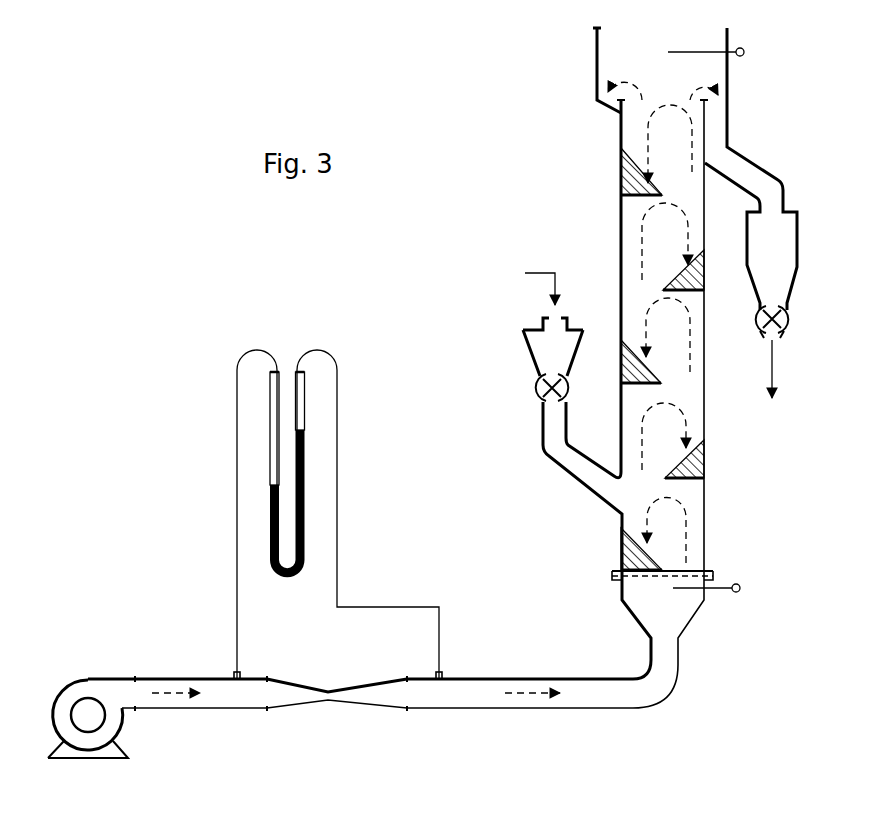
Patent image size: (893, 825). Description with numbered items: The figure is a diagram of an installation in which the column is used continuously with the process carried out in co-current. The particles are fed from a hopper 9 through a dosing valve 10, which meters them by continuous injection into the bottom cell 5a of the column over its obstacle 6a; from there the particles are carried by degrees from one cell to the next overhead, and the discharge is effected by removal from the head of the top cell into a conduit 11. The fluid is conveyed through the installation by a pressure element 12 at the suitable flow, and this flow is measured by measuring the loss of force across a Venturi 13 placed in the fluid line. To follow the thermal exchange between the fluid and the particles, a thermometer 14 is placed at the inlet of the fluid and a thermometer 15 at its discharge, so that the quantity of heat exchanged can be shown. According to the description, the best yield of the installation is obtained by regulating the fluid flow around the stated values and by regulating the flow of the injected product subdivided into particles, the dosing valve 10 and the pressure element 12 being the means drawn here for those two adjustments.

The bottom cell 5a is at (706, 532).
The obstacle 6a is at (621, 549).
The hopper 9 is at (532, 345).
The dosing valve 10 is at (540, 393).
The conduit 11 is at (737, 166).
The pressure element 12 is at (64, 682).
The Venturi 13 is at (342, 690).
The thermometer 14 is at (720, 590).
The thermometer 15 is at (742, 56).